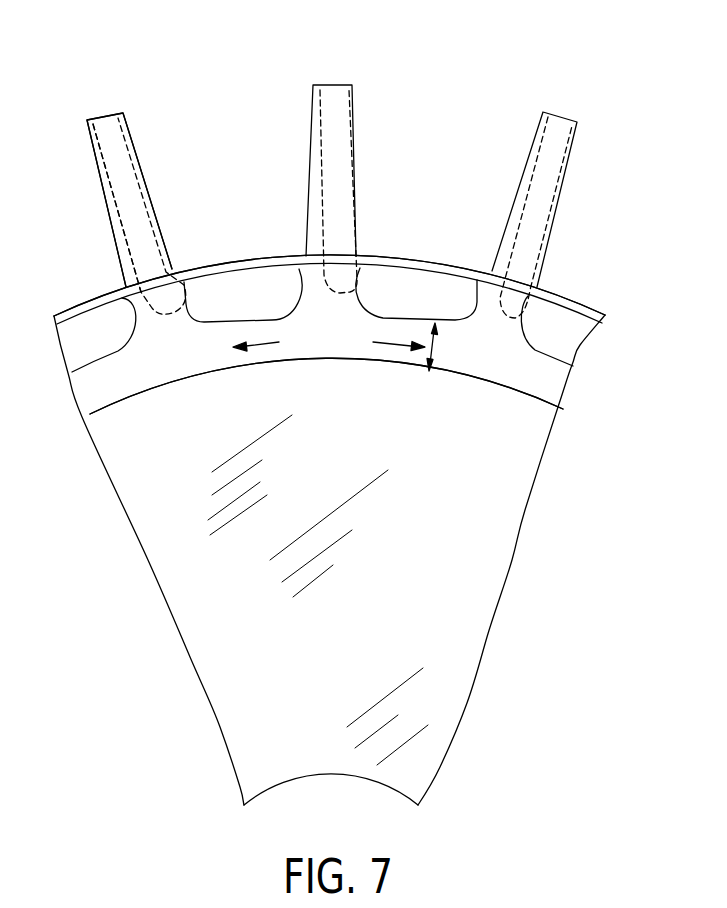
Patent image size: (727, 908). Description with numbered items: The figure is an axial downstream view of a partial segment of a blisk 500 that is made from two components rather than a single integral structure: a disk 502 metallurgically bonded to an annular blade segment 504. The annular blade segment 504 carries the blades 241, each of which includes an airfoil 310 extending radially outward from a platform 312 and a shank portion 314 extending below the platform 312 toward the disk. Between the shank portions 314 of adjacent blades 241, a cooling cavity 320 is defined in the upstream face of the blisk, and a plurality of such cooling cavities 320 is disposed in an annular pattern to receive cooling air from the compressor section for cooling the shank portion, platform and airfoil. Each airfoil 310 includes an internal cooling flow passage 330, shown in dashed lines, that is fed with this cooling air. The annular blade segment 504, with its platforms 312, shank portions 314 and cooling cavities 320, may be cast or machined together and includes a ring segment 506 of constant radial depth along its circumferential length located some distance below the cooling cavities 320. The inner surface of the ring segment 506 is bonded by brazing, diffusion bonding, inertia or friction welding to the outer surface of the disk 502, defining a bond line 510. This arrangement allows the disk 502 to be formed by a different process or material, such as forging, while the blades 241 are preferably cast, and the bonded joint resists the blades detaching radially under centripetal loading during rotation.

The blades 241 is at (107, 117).
The airfoil 310 is at (147, 154).
The platform 312 is at (412, 262).
The shank portion 314 is at (313, 302).
The cooling cavity 320 is at (262, 310).
The internal cooling flow passage 330 is at (102, 212).
The blisk 500 is at (329, 415).
The disk 502 is at (515, 512).
The annular blade segment 504 is at (550, 385).
The ring segment 506 is at (438, 345).
The bond line 510 is at (317, 364).